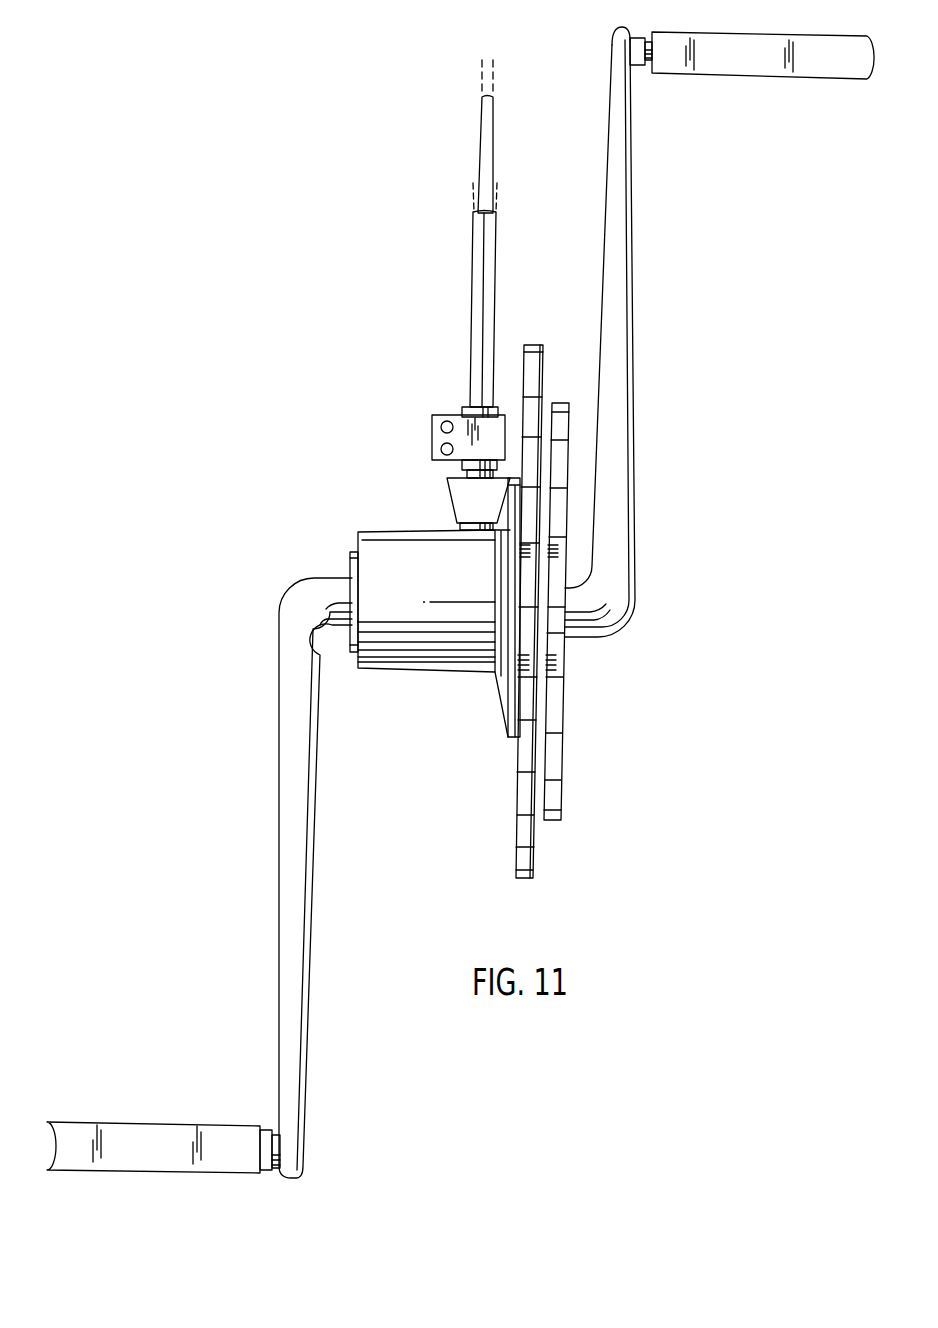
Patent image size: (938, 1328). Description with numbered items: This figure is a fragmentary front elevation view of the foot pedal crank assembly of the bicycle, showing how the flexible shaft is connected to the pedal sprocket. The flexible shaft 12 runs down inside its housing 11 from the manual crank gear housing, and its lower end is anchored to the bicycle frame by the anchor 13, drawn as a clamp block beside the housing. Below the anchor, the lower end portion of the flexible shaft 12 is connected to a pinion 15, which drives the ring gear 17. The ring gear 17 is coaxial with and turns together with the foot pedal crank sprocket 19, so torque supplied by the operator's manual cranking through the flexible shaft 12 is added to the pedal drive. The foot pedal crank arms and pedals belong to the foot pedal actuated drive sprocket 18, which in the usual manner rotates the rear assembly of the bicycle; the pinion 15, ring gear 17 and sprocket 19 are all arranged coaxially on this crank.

The foot pedal actuated drive sprocket 18 is at (328, 215).
The flexible shaft 12 is at (493, 153).
The housing 11 is at (472, 277).
The anchor 13 is at (432, 441).
The pinion 15 is at (447, 493).
The ring gear 17 is at (493, 690).
The foot pedal crank sprocket 19 is at (516, 848).